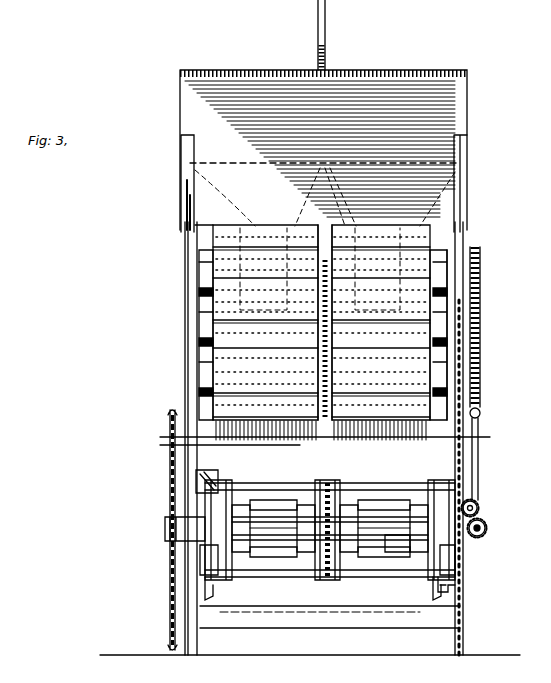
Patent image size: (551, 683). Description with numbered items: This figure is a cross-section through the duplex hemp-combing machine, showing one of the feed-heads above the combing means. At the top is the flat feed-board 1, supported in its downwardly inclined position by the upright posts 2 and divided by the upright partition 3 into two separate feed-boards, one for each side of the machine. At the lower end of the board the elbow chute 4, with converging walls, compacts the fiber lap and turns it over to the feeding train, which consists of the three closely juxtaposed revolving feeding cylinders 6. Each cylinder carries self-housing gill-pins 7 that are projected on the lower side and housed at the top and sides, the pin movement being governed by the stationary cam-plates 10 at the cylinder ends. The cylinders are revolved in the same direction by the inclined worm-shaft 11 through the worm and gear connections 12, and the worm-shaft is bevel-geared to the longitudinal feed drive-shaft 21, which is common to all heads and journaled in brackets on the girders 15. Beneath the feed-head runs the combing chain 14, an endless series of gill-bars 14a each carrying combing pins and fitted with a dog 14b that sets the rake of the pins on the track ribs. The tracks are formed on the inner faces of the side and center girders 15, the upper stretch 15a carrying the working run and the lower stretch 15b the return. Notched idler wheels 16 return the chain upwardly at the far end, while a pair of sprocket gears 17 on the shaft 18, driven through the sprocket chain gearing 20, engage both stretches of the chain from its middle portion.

The feed-board 1 is at (248, 70).
The upright posts 2 is at (462, 154).
The upright partition 3 is at (326, 46).
The elbow chute 4 is at (476, 230).
The feeding cylinders 6 is at (237, 317).
The gill-pins 7 is at (160, 437).
The cam-plates 10 is at (293, 226).
The worm-shaft 11 is at (481, 415).
The worm and gear connections 12 is at (480, 372).
The combing chain 14 is at (445, 470).
The gill-bars 14a is at (478, 497).
The dog 14b is at (452, 590).
The side and center girders 15 is at (326, 480).
The upper track stretch 15a is at (205, 493).
The lower track stretch 15b is at (222, 585).
The notched idler wheels 16 is at (292, 556).
The sprocket gears 17 is at (218, 555).
The shaft 18 is at (170, 533).
The sprocket chain gearing 20 is at (170, 628).
The feed drive-shaft 21 is at (488, 526).